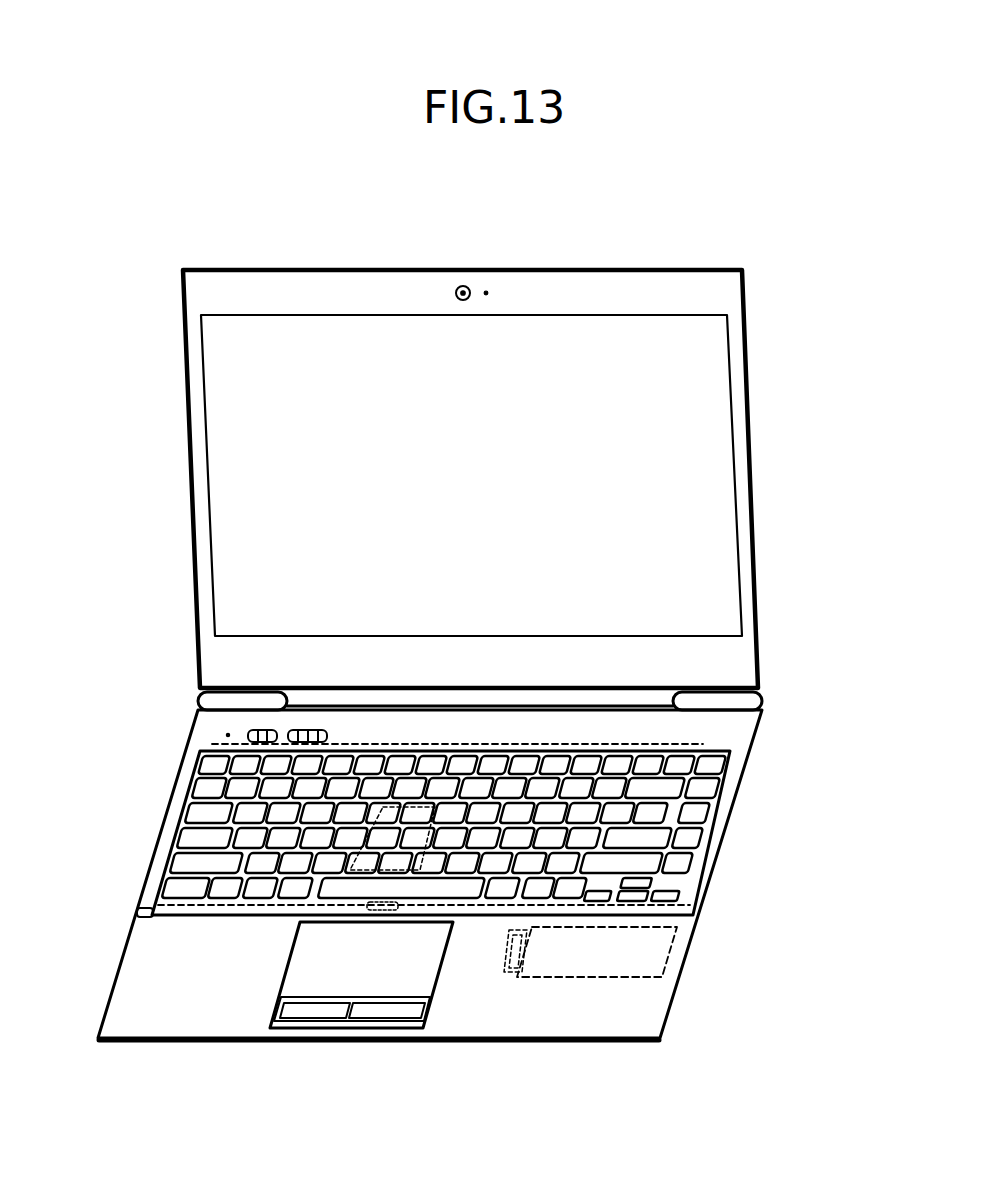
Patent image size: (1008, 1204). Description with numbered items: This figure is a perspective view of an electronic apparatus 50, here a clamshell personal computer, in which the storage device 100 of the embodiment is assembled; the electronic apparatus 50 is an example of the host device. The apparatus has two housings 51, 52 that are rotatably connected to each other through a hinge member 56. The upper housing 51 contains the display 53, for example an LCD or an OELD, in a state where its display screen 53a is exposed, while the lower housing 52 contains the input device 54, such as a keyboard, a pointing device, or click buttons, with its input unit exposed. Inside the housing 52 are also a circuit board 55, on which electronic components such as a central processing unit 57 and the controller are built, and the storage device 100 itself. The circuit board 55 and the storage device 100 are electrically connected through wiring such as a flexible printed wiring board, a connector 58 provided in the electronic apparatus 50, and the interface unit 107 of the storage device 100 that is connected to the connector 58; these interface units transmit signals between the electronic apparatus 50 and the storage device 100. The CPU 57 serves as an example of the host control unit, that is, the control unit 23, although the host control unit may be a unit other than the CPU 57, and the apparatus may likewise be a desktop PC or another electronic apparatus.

The electronic apparatus 50 is at (736, 230).
The housing 51 is at (505, 446).
The housing 52 is at (673, 1020).
The display 53 is at (471, 420).
The display screen 53a is at (315, 328).
The input device 54 is at (388, 828).
The circuit board 55 is at (703, 744).
The hinge member 56 is at (229, 692).
The central processing unit (CPU) 57 is at (309, 955).
The control unit 23 is at (309, 955).
The connector 58 is at (505, 972).
The storage device 100 is at (672, 947).
The interface unit 107 is at (517, 972).